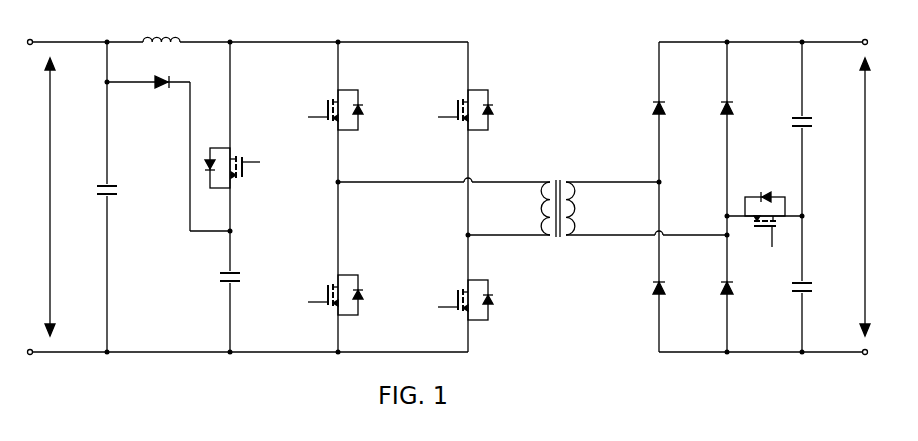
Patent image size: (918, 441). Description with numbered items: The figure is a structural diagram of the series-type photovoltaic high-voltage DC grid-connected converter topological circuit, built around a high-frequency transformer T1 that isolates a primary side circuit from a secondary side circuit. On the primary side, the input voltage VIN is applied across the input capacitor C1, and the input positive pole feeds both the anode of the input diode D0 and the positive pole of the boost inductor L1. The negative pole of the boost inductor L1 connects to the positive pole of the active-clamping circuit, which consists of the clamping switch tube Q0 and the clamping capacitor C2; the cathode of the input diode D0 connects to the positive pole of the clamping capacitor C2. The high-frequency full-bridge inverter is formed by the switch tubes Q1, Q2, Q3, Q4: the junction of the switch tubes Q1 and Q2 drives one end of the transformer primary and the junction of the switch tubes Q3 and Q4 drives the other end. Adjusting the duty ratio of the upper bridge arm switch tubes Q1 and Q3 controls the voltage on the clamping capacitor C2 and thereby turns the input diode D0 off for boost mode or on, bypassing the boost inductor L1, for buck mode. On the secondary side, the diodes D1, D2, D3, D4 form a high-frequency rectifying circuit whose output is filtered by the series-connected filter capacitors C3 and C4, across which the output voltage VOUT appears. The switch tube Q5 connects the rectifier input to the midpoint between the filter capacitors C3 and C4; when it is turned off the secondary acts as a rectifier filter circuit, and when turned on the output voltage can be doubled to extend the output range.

The input voltage VIN is at (30, 197).
The output voltage VOUT is at (884, 197).
The boost inductor L1 is at (161, 52).
The input diode D0 is at (168, 153).
The clamping switch tube Q0 is at (239, 168).
The input capacitor C1 is at (119, 194).
The clamping capacitor C2 is at (242, 280).
The switch tube Q1 is at (345, 110).
The switch tube Q2 is at (345, 295).
The switch tube Q3 is at (475, 110).
The switch tube Q4 is at (475, 300).
The high-frequency transformer T1 is at (558, 209).
The diode D1 is at (670, 111).
The diode D2 is at (670, 291).
The diode D3 is at (738, 111).
The diode D4 is at (738, 291).
The filter capacitor C3 is at (815, 125).
The filter capacitor C4 is at (815, 291).
The switch tube Q5 is at (764, 209).